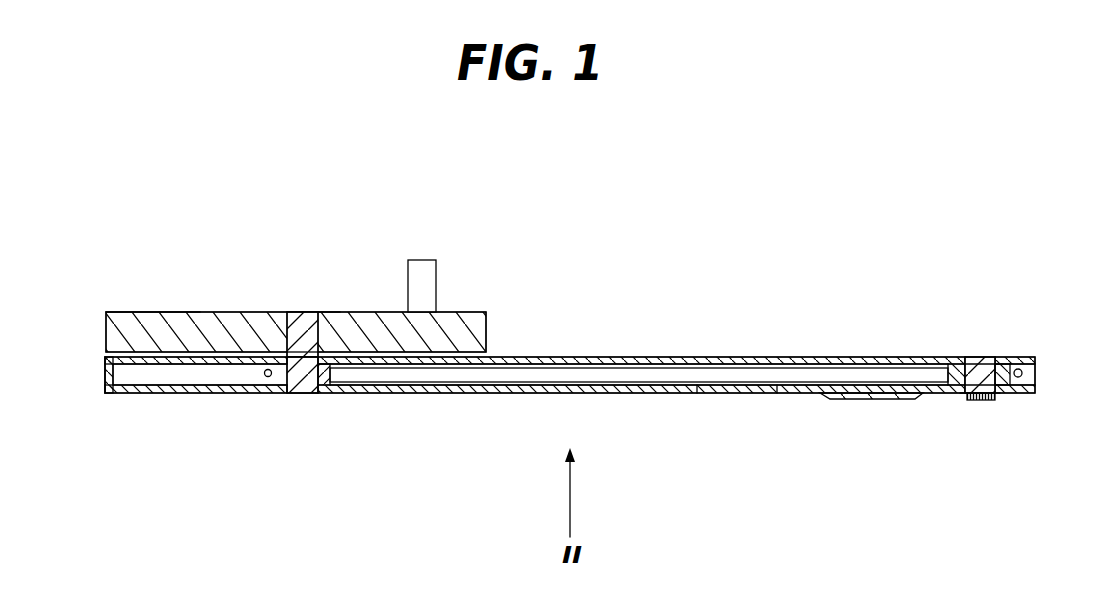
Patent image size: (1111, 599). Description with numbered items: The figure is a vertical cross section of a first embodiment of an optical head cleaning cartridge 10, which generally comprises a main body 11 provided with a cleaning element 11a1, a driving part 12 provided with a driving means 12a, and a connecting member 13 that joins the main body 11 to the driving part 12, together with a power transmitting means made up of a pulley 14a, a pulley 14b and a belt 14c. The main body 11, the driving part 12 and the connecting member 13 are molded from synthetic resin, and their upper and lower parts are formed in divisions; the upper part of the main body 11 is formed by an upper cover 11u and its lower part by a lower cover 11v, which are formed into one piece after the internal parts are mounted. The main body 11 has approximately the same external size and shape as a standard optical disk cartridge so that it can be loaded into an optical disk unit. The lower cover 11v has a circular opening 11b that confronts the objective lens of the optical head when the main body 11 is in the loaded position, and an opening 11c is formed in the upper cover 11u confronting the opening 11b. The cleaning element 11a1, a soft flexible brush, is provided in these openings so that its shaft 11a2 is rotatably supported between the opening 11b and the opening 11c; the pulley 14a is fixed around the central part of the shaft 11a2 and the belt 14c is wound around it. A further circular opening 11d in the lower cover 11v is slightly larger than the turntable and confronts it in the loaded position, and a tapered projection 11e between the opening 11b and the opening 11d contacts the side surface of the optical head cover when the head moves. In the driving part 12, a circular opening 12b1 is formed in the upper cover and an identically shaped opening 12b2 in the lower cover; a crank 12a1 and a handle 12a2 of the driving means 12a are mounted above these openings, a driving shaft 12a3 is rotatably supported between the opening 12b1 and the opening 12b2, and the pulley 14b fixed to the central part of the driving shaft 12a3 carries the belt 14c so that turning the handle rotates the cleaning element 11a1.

The optical head cleaning cartridge 10 is at (655, 152).
The main body 11 is at (998, 268).
The cleaning element 11a1 is at (998, 402).
The shaft 11a2 is at (972, 357).
The circular opening 11b is at (963, 402).
The opening 11c is at (992, 357).
The circular opening 11d is at (702, 395).
The projection 11e is at (880, 401).
The upper cover 11u is at (860, 357).
The lower cover 11v is at (777, 393).
The driving part 12 is at (96, 348).
The driving means 12a is at (494, 249).
The crank 12a1 is at (168, 312).
The handle 12a2 is at (422, 262).
The driving shaft 12a3 is at (306, 318).
The circular opening 12b1 is at (292, 330).
The opening 12b2 is at (290, 393).
The connecting member 13 is at (523, 341).
The pulley 14a is at (1010, 357).
The pulley 14b is at (325, 393).
The belt 14c is at (515, 378).